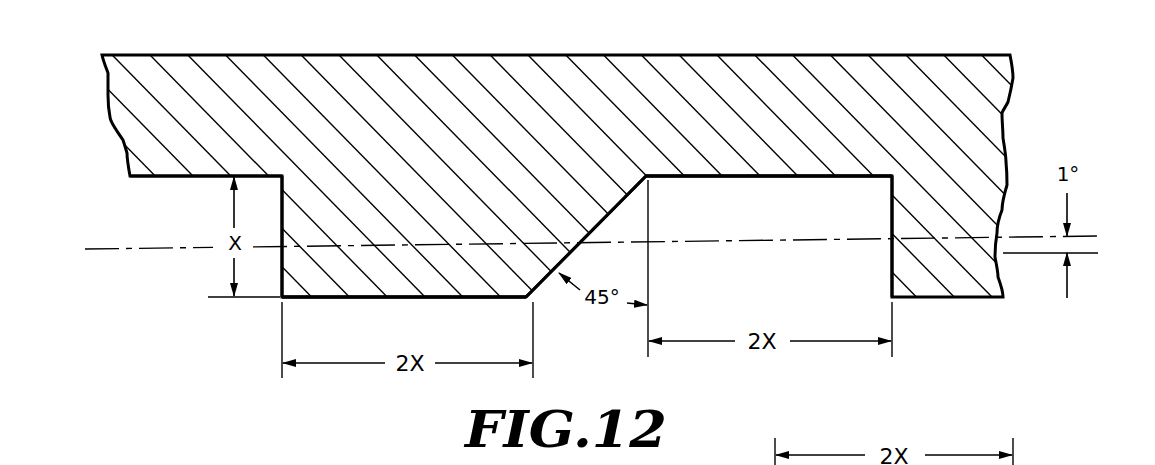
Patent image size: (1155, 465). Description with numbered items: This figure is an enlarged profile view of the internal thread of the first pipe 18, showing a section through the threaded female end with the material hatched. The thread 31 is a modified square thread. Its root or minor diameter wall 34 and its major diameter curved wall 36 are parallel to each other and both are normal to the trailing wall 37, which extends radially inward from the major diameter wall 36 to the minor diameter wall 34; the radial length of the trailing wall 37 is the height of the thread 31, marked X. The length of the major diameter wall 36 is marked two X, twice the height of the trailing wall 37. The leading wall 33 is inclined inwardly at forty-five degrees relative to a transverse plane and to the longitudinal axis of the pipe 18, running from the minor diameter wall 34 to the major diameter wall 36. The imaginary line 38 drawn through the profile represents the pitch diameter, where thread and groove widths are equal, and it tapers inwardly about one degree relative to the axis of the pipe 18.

The pipe 18 is at (482, 75).
The minor diameter wall 34 is at (173, 180).
The trailing wall 37 is at (280, 270).
The major diameter curved wall 36 is at (342, 300).
The internal thread 31 is at (455, 268).
The leading wall 33 is at (540, 283).
The imaginary line 38 is at (720, 242).